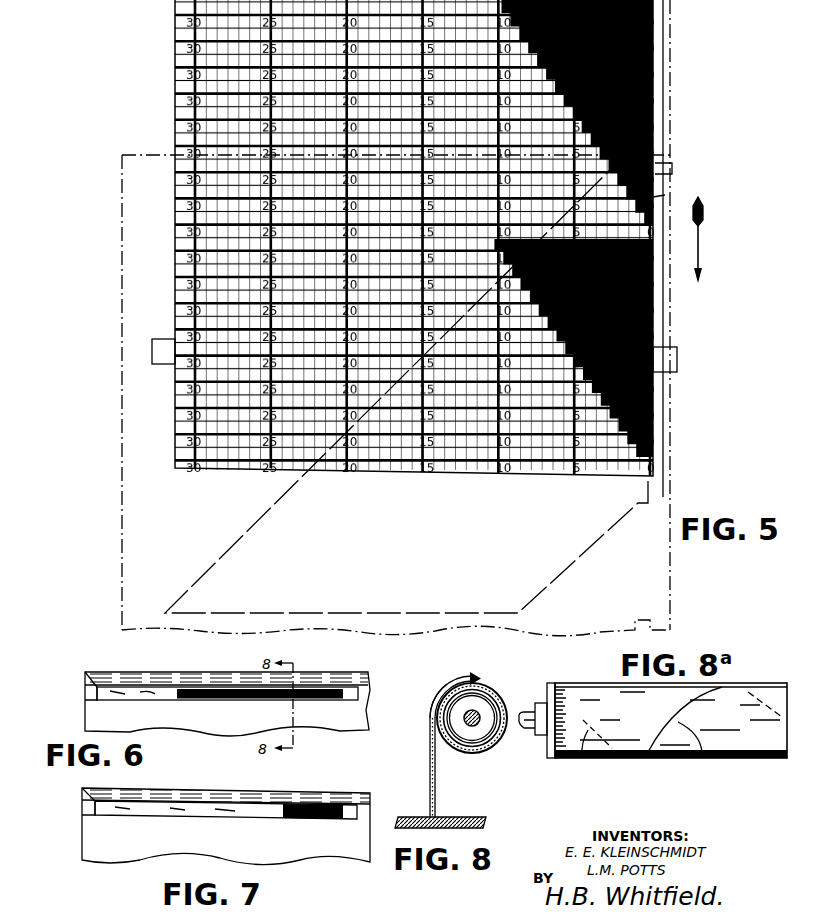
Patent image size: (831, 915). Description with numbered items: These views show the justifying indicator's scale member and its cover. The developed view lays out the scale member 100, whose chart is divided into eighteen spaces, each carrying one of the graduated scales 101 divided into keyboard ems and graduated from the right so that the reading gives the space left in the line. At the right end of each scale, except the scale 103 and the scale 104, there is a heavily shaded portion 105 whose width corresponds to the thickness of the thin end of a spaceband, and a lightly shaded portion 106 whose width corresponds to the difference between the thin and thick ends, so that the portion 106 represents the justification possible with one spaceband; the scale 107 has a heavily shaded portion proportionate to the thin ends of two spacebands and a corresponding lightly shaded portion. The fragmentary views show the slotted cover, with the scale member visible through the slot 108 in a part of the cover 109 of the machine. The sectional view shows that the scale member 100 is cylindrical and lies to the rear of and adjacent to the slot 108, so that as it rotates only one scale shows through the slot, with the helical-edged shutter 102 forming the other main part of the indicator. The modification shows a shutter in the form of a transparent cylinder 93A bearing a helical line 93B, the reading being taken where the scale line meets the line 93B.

In FIG. 5, the scale member 100 is at (672, 70).
In FIG. 8, the scale member 100 is at (481, 706).
In FIG. 6, the scales 101 is at (238, 660).
In FIG. 7, the scales 101 is at (314, 808).
In FIG. 8, the scales 101 is at (490, 706).
In FIG. 6, the helical-edged shutter 102 is at (150, 660).
In FIG. 7, the helical-edged shutter 102 is at (250, 808).
In FIG. 8, the helical-edged shutter 102 is at (478, 686).
In FIG. 5, the scale 103 is at (648, 222).
In FIG. 5, the scale 104 is at (650, 455).
In FIG. 5, the heavily shaded portion 105 is at (653, 199).
In FIG. 5, the lightly shaded portion 106 is at (653, 185).
In FIG. 5, the scale 107 is at (665, 137).
In FIG. 6, the slot 108 is at (90, 690).
In FIG. 7, the slot 108 is at (93, 808).
In FIG. 8, the slot 108 is at (443, 697).
In FIG. 6, the cover 109 is at (95, 709).
In FIG. 7, the cover 109 is at (90, 838).
In FIG. 8, the cover 109 is at (430, 757).
In FIG. 8A, the transparent cylinder 93A is at (582, 758).
In FIG. 8A, the helical line 93B is at (705, 758).